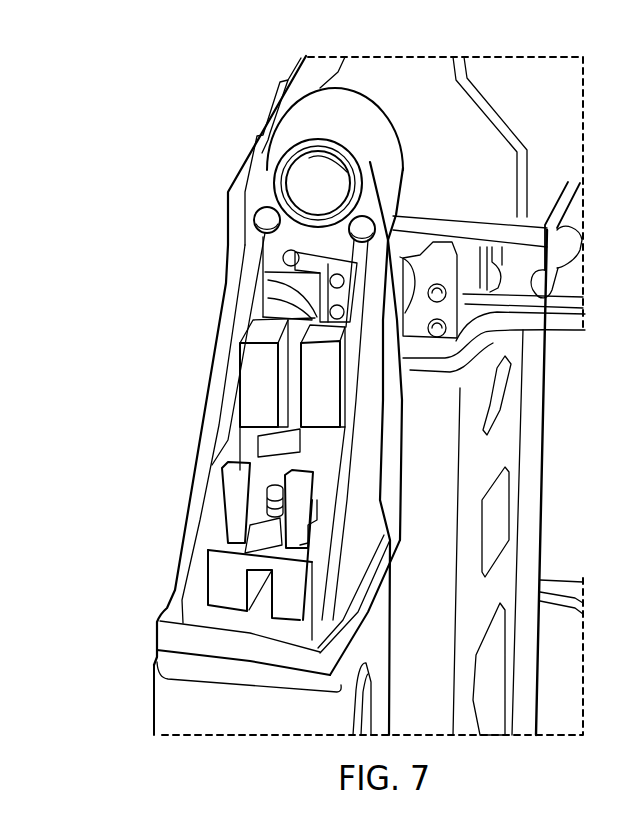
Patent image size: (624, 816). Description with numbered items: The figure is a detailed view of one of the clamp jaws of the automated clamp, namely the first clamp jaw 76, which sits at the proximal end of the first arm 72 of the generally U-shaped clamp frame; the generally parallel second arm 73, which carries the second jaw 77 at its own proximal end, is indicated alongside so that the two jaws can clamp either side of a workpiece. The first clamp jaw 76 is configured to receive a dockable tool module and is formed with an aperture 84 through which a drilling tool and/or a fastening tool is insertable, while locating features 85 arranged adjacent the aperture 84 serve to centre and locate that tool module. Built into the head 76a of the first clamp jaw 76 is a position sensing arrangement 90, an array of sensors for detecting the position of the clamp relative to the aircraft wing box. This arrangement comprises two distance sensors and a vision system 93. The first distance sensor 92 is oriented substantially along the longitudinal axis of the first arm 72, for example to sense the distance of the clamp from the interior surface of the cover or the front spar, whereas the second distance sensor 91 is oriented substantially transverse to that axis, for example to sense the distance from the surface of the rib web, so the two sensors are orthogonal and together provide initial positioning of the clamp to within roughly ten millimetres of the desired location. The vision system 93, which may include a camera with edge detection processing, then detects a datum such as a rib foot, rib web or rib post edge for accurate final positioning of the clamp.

The first arm 72 is at (183, 705).
The second arm 73 is at (533, 478).
The first clamp jaw 76 is at (302, 125).
The head 76a is at (187, 583).
The second jaw 77 is at (421, 75).
The aperture 84 is at (290, 188).
The locating features 85 is at (353, 242).
The position sensing arrangement 90 is at (136, 402).
The second distance sensor 91 is at (290, 590).
The first distance sensor 92 is at (320, 376).
The vision system 93 is at (263, 497).